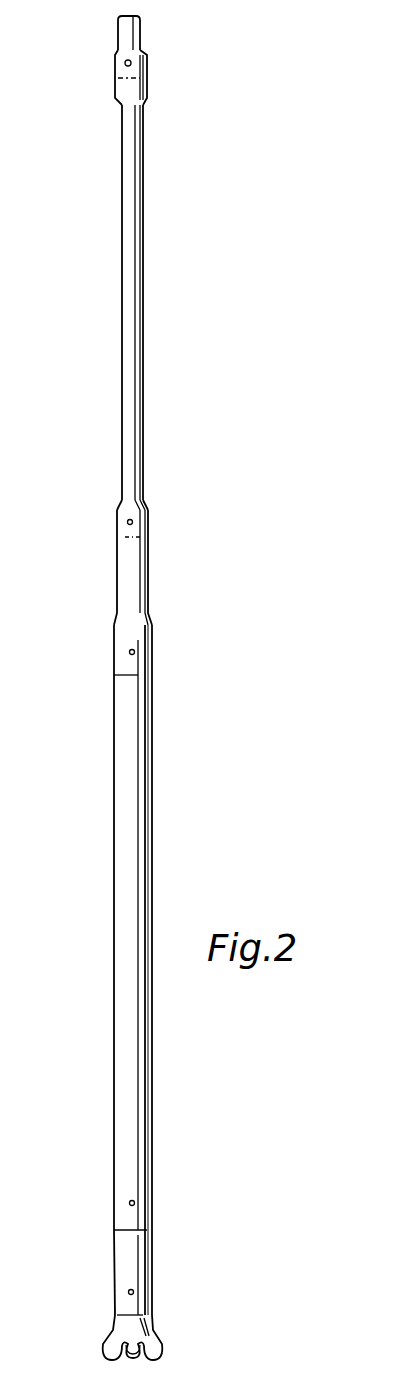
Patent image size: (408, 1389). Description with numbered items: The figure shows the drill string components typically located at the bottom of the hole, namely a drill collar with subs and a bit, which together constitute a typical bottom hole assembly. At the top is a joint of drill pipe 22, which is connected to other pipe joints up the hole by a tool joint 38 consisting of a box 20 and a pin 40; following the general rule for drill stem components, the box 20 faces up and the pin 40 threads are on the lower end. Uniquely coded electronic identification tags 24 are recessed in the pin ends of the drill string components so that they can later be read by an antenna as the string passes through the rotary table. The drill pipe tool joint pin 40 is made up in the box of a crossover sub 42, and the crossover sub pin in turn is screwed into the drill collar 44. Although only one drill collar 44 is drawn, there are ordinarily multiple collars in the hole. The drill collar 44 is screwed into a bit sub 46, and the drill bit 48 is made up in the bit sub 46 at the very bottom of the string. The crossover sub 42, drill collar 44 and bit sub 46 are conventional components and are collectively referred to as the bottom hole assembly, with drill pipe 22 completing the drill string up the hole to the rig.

The tool joint box 20 is at (147, 93).
The drill pipe 22 is at (143, 26).
The electronic identification tags 24 is at (152, 70).
The tool joint 38 is at (100, 80).
The pin 40 is at (147, 52).
The crossover sub 42 is at (150, 580).
The drill collar 44 is at (152, 768).
The bit sub 46 is at (157, 1257).
The drill bit 48 is at (100, 1337).